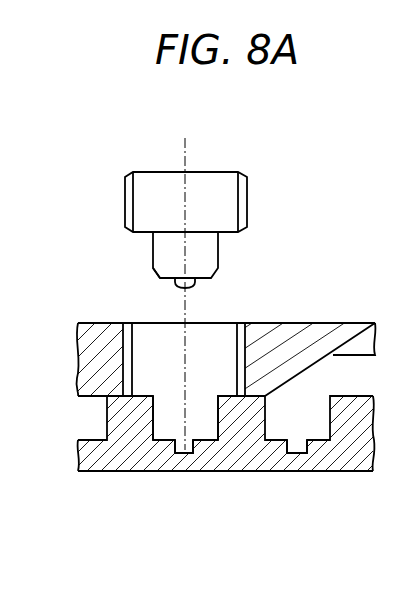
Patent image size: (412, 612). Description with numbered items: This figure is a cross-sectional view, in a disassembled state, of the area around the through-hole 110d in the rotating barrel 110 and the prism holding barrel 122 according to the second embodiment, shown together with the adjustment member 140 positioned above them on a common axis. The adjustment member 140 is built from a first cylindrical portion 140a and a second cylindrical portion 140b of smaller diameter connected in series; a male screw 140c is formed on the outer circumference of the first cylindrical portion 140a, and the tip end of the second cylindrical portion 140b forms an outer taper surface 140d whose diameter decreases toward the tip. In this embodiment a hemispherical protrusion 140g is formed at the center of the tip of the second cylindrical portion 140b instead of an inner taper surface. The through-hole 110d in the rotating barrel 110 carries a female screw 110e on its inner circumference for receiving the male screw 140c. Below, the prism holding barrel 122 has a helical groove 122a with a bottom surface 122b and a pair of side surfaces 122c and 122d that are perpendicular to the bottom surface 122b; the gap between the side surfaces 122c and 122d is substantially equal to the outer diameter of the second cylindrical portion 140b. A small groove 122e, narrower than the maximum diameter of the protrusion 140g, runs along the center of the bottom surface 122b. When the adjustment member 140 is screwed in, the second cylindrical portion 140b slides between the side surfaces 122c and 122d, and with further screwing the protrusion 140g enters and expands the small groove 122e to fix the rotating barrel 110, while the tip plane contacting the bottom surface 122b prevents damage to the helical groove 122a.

The adjustment member 140 is at (189, 200).
The first cylindrical portion 140a is at (203, 178).
The second cylindrical portion 140b is at (208, 247).
The male screw 140c is at (248, 185).
The outer taper surface 140d is at (150, 268).
The hemispherical protrusion 140g is at (203, 292).
The rotating barrel 110 is at (221, 270).
The through-hole 110d is at (244, 328).
The female screw 110e is at (134, 364).
The prism holding barrel 122 is at (224, 484).
The helical groove 122a is at (314, 440).
The bottom surface 122b is at (185, 456).
The side surface 122c is at (154, 412).
The side surface 122d is at (213, 427).
The small groove 122e is at (196, 452).